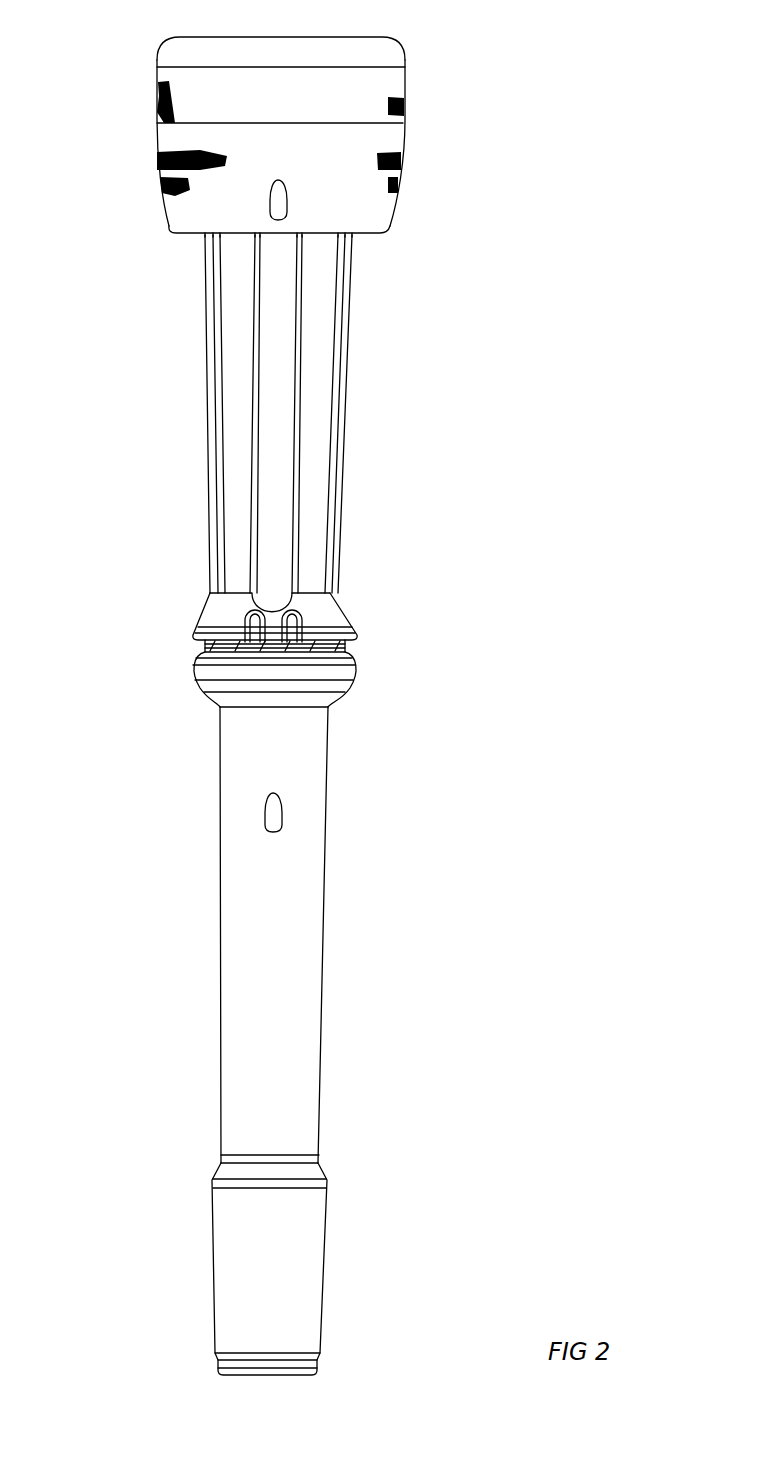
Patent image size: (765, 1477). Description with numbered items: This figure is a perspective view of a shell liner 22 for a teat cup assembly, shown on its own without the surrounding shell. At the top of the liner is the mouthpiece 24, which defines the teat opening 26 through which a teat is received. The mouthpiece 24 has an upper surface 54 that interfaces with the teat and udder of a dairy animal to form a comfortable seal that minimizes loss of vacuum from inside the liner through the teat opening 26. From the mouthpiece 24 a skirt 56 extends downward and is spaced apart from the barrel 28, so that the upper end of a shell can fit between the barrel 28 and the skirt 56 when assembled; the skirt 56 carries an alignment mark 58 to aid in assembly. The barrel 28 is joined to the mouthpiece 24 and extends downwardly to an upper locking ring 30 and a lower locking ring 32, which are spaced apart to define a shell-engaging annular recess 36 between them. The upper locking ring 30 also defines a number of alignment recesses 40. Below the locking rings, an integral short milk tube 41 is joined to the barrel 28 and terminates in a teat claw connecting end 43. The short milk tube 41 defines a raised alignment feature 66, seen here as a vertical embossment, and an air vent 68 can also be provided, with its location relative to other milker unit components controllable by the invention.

The teat opening 26 is at (254, 22).
The upper surface 54 is at (350, 33).
The mouthpiece 24 is at (385, 80).
The alignment mark 58 is at (278, 198).
The skirt 56 is at (185, 210).
The barrel 28 is at (278, 300).
The shell liner 22 is at (398, 365).
The upper locking ring 30 is at (320, 617).
The alignment recesses 40 is at (245, 620).
The shell-engaging annular recess 36 is at (210, 645).
The lower locking ring 32 is at (336, 672).
The air vent 68 is at (273, 743).
The alignment feature 66 is at (277, 810).
The short milk tube 41 is at (293, 967).
The teat claw connecting end 43 is at (292, 1250).